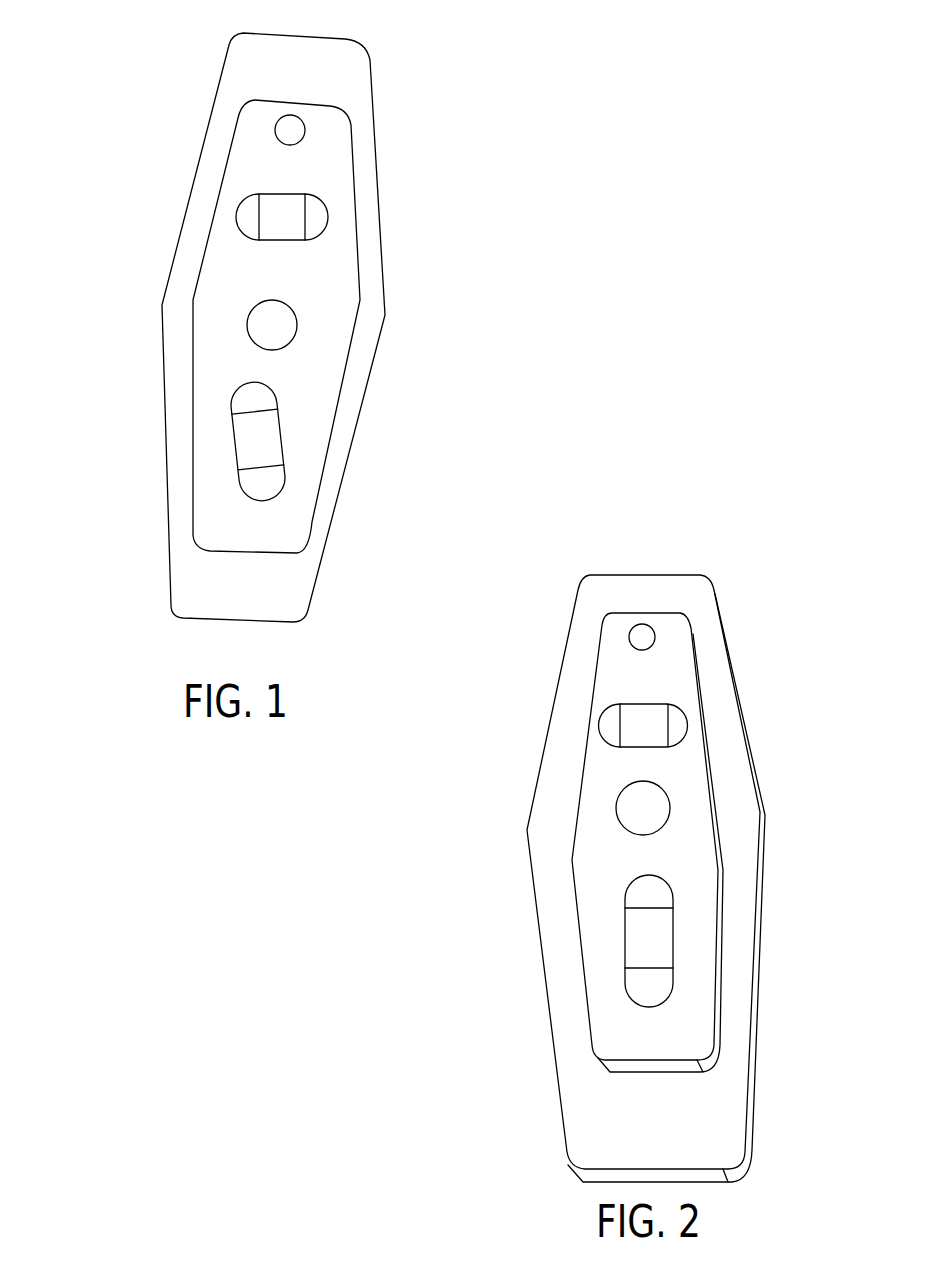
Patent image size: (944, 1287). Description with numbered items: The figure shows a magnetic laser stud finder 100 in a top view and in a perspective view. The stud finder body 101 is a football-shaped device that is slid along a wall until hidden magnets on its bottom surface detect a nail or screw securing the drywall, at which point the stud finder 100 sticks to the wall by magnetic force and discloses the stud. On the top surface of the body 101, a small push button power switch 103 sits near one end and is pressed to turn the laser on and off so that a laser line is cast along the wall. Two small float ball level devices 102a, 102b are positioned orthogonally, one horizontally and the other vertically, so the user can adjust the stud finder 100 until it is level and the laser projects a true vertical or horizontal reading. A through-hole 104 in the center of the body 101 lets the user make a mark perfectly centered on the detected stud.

In FIG. 1, the magnetic laser stud finder 100 is at (230, 311).
In FIG. 2, the magnetic laser stud finder 100 is at (610, 521).
In FIG. 1, the stud finder body 101 is at (337, 40).
In FIG. 1, the float ball level device 102a is at (302, 193).
In FIG. 2, the float ball level device 102a is at (658, 713).
In FIG. 1, the float ball level device 102b is at (282, 433).
In FIG. 2, the float ball level device 102b is at (648, 948).
In FIG. 1, the push button power switch 103 is at (292, 133).
In FIG. 2, the push button power switch 103 is at (643, 630).
In FIG. 1, the through-hole 104 is at (262, 323).
In FIG. 2, the through-hole 104 is at (628, 812).